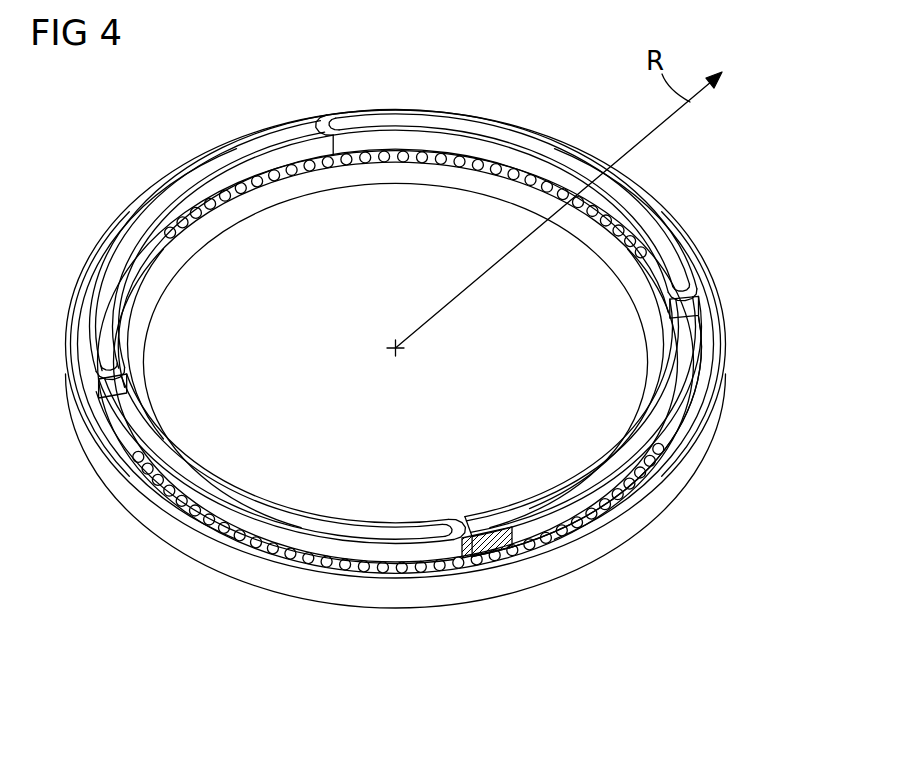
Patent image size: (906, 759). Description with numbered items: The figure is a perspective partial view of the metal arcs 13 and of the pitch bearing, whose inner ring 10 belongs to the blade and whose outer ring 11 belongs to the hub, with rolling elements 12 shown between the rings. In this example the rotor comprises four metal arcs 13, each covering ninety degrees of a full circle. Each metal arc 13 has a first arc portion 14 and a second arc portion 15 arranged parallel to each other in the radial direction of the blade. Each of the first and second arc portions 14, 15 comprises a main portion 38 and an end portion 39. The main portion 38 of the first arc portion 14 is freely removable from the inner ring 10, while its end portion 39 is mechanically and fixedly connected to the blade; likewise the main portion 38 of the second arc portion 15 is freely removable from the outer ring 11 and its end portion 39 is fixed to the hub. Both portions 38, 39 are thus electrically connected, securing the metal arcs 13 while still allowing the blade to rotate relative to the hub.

The inner ring 10 is at (643, 270).
The outer ring 11 is at (703, 455).
The rolling elements (balls) 12 is at (291, 565).
The metal arcs 13 is at (434, 414).
The first arc portion 14 is at (655, 267).
The second arc portion 15 is at (647, 224).
The main portion 38 is at (583, 491).
The end portion 39 is at (510, 500).